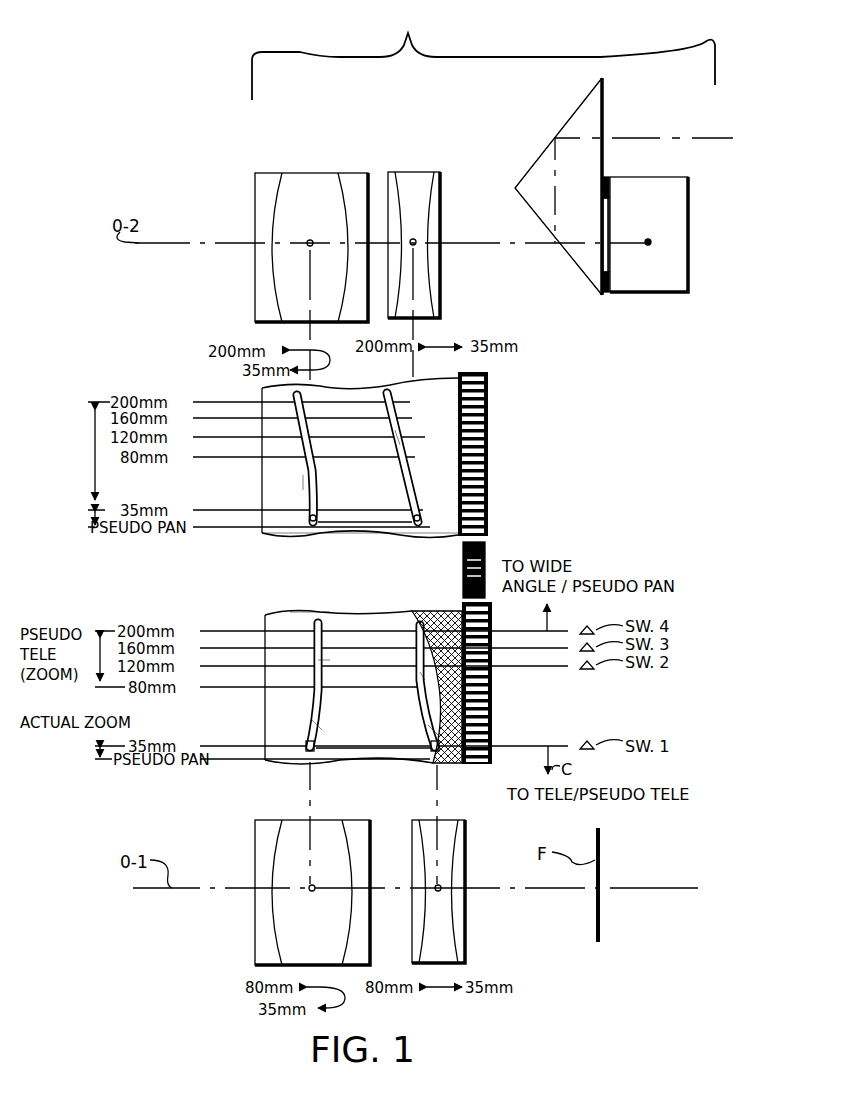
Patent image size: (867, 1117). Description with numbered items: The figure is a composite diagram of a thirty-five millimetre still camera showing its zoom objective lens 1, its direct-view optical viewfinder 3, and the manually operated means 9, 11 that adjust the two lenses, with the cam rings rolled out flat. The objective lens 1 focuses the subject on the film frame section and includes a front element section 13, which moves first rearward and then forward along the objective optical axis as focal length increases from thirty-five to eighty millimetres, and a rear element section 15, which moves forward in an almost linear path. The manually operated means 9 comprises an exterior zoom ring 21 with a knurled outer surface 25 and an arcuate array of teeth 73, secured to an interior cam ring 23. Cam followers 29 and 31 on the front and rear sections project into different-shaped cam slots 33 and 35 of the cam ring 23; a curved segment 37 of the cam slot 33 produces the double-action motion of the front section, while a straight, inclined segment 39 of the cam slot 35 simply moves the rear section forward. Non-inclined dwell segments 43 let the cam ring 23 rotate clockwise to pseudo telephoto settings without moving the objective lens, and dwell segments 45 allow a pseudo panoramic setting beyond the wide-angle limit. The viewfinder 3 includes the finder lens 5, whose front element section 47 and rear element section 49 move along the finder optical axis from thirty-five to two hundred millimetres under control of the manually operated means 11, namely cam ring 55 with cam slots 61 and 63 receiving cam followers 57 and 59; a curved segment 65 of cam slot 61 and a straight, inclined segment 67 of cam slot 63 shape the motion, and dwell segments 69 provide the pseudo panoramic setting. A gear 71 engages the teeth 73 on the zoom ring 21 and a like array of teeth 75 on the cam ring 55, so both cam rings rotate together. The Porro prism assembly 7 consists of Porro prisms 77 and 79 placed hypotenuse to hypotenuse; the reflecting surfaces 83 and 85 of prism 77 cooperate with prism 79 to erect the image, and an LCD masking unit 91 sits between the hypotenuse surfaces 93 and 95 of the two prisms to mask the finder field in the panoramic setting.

The objective lens 1 is at (349, 883).
The optical viewfinder 3 is at (483, 53).
The finder lens 5 is at (278, 236).
The Porro prism assembly 7 is at (617, 186).
The manually operated means 9 is at (262, 615).
The manually operated means 11 is at (256, 388).
The front element section 13 is at (255, 866).
The rear element section 15 is at (466, 848).
The zoom ring 21 is at (450, 765).
The cam ring 23 is at (316, 612).
The knurled outer surface 25 is at (437, 765).
The cam follower 29 is at (306, 740).
The cam follower 31 is at (437, 730).
The cam slot 33 is at (323, 696).
The cam slot 35 is at (424, 677).
The curved segment 37 is at (321, 726).
The straight, inclined segment 39 is at (426, 704).
The dwell segments 43 is at (417, 657).
The dwell segments 45 is at (430, 748).
The front element section 47 is at (255, 233).
The rear element section 49 is at (440, 226).
The cam ring 55 is at (350, 534).
The cam follower 57 is at (320, 510).
The cam follower 59 is at (413, 512).
The cam slot 61 is at (315, 462).
The cam slot 63 is at (402, 458).
The curved segment 65 is at (302, 482).
The straight, inclined segment 67 is at (400, 442).
The dwell segments 69 is at (398, 520).
The gear 71 is at (463, 580).
The arcuate array of teeth 73 is at (492, 700).
The array of teeth 75 is at (488, 465).
The Porro prism 77 is at (548, 165).
The Porro prism 79 is at (690, 215).
The reflecting surface 83 is at (572, 246).
The reflecting surface 85 is at (600, 108).
The LCD masking unit 91 is at (606, 294).
The hypotenuse surface 93 is at (614, 248).
The hypotenuse surface 95 is at (611, 212).